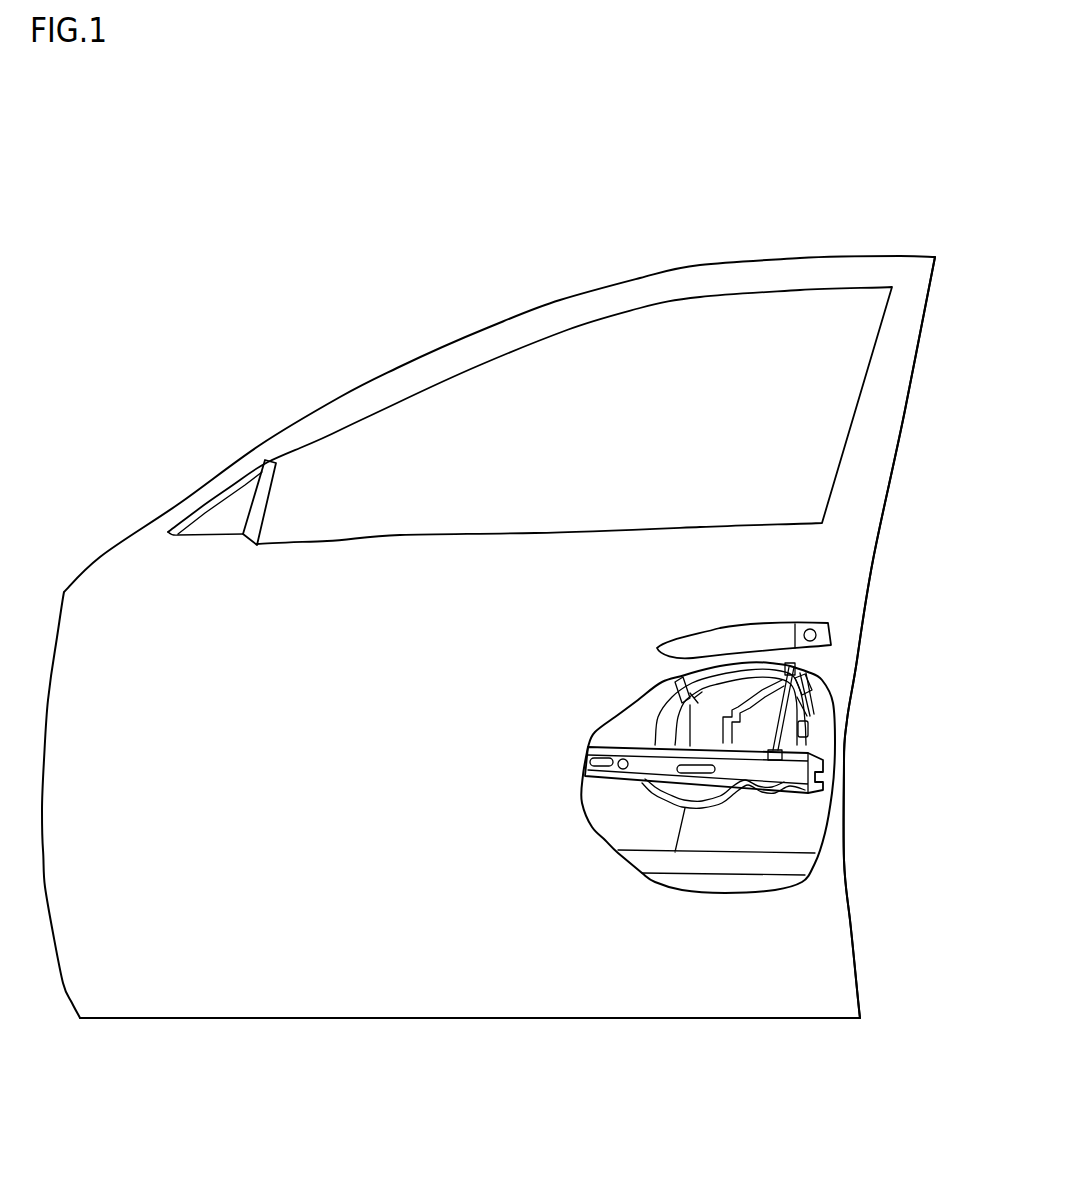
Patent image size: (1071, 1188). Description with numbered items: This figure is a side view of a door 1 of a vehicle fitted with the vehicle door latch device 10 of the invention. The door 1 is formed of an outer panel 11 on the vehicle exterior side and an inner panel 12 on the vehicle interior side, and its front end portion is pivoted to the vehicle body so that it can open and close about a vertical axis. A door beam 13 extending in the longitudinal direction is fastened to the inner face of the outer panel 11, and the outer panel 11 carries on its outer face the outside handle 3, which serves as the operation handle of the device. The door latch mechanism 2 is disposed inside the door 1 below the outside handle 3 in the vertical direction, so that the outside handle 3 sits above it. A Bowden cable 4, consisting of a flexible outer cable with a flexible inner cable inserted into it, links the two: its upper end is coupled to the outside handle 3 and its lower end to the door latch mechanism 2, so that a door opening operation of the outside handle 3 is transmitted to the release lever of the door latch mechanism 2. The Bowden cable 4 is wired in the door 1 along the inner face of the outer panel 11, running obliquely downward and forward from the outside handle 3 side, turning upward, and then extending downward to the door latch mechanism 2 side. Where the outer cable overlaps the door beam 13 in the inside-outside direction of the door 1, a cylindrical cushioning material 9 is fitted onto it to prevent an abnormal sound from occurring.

The door 1 is at (487, 326).
The door latch mechanism 2 is at (818, 727).
The outside handle 3 is at (728, 618).
The Bowden cable 4 is at (685, 692).
The cushioning material 9 is at (714, 668).
The vehicle door latch device 10 is at (878, 665).
The outer panel 11 is at (338, 780).
The inner panel 12 is at (768, 845).
The door beam 13 is at (610, 777).